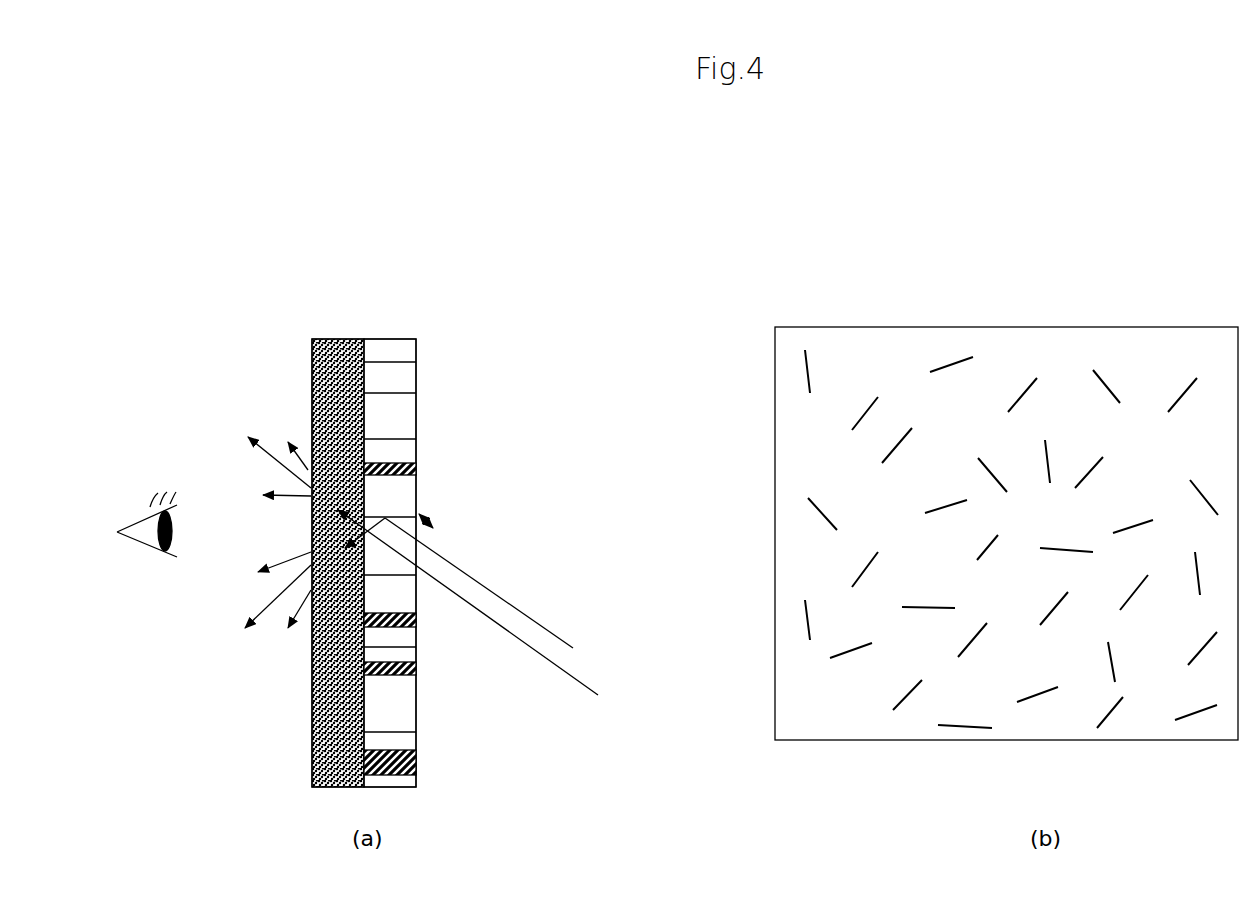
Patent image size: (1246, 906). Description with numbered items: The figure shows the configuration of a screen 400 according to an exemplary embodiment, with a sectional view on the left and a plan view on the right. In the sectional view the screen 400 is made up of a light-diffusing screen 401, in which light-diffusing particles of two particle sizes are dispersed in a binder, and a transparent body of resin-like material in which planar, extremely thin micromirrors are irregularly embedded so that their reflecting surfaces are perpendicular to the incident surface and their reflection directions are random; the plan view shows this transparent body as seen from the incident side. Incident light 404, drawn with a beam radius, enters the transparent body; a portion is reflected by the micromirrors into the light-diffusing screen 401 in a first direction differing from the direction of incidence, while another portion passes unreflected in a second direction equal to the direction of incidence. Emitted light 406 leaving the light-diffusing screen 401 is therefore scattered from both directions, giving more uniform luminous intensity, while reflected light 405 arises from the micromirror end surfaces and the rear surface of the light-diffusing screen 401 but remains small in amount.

The screen 400 is at (350, 262).
The light-diffusing screen 401 is at (311, 340).
The incident light 404 is at (507, 623).
The reflected light 405 is at (428, 515).
The emitted light 406 is at (267, 452).